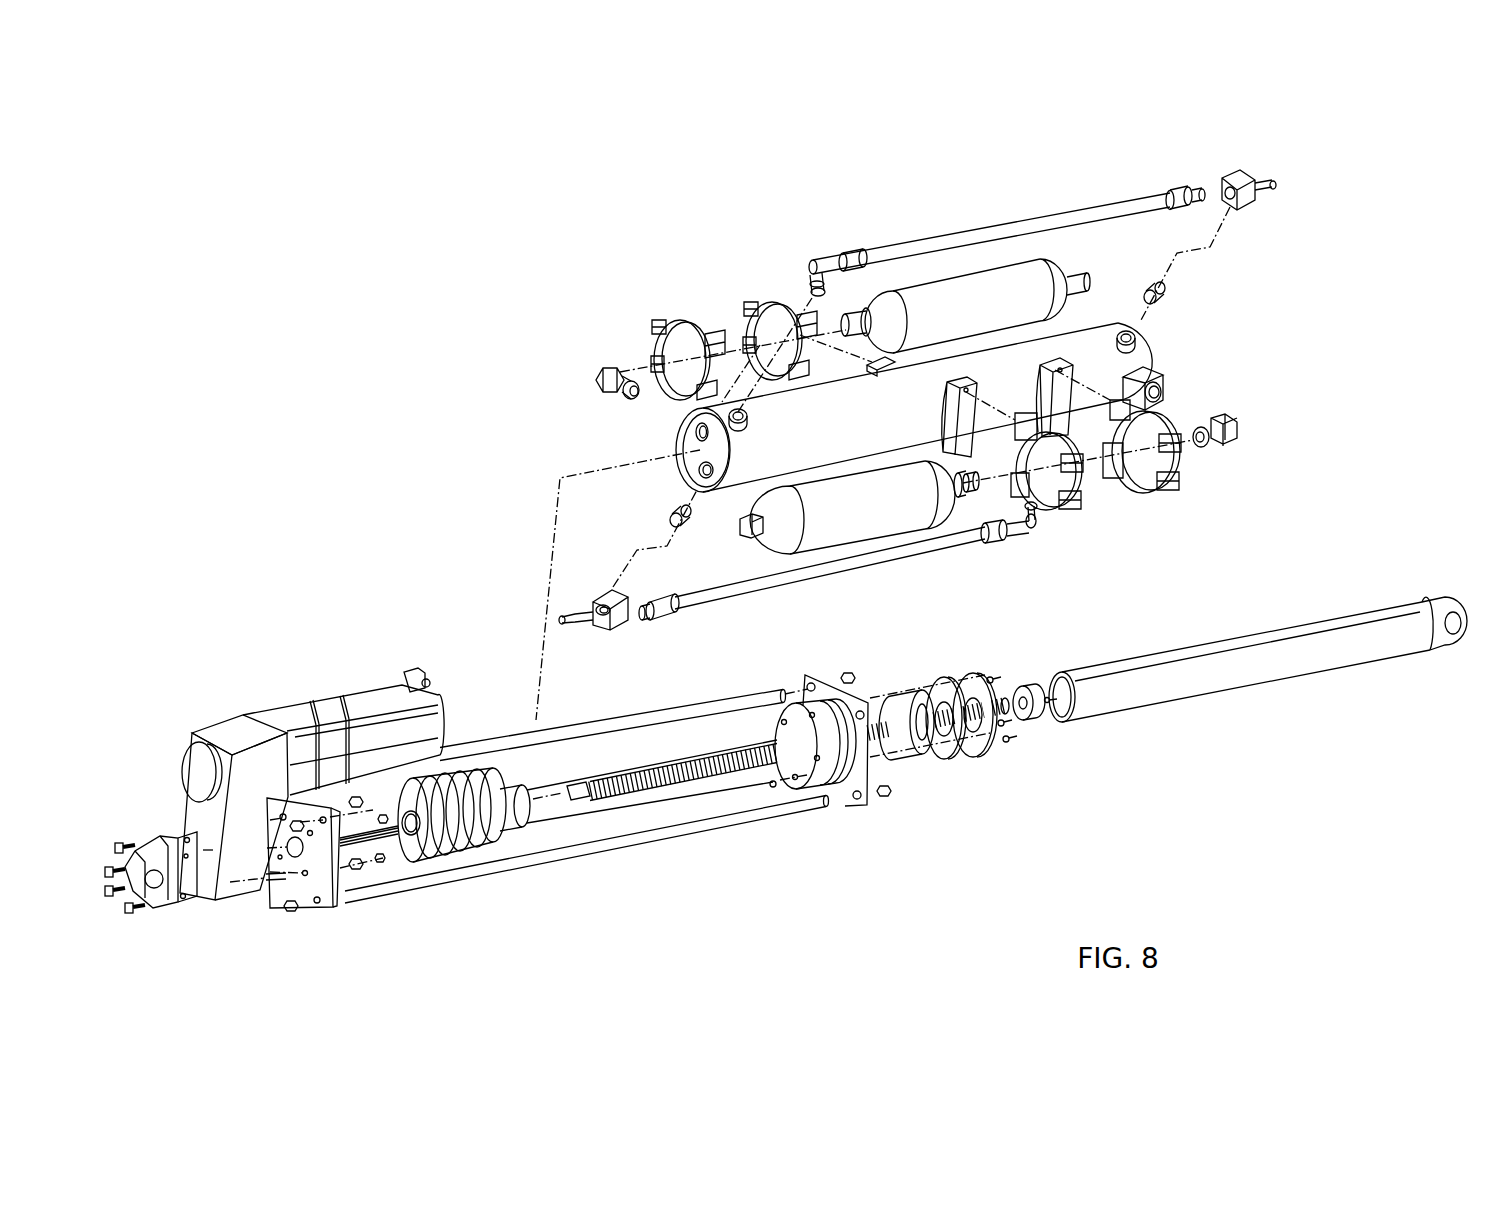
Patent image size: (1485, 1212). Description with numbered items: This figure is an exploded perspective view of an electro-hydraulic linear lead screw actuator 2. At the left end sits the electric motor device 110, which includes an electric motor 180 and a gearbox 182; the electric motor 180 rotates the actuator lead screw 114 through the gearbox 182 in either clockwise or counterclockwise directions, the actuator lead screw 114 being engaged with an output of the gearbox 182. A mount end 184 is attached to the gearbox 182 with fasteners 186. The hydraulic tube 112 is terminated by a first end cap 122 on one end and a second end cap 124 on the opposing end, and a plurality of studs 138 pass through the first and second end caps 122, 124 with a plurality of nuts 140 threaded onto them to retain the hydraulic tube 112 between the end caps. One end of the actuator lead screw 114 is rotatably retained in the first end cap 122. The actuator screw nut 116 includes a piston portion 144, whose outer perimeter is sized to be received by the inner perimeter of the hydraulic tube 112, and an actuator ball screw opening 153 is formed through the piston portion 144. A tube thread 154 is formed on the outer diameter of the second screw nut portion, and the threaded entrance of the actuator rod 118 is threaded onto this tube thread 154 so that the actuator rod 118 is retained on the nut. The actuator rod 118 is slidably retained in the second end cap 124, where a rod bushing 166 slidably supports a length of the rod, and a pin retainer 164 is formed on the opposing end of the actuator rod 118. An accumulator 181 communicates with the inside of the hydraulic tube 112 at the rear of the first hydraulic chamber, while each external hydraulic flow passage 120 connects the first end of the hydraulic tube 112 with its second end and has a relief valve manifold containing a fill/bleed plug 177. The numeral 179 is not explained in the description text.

The electro-hydraulic linear lead screw actuator 2 is at (786, 565).
The electric motor device 110 is at (786, 747).
The hydraulic tube 112 is at (1157, 350).
The actuator lead screw 114 is at (788, 784).
The actuator screw nut 116 is at (584, 792).
The actuator rod 118 is at (1258, 636).
The external hydraulic flow passage 120 is at (1010, 225).
The first end cap 122 is at (325, 910).
The second end cap 124 is at (863, 807).
The studs 138 is at (595, 850).
The nuts 140 is at (285, 910).
The piston portion 144 is at (461, 857).
The actuator ball screw opening 153 is at (412, 834).
The tube thread 154 is at (663, 757).
The pin retainer 164 is at (1443, 595).
The rod bushing 166 is at (914, 692).
The fill/bleed plug 177 is at (1247, 200).
The port block 179 is at (1160, 387).
The electric motor 180 is at (373, 698).
The accumulator 181 is at (1062, 266).
The gearbox 182 is at (225, 730).
The mount end 184 is at (158, 843).
The fasteners 186 is at (137, 912).